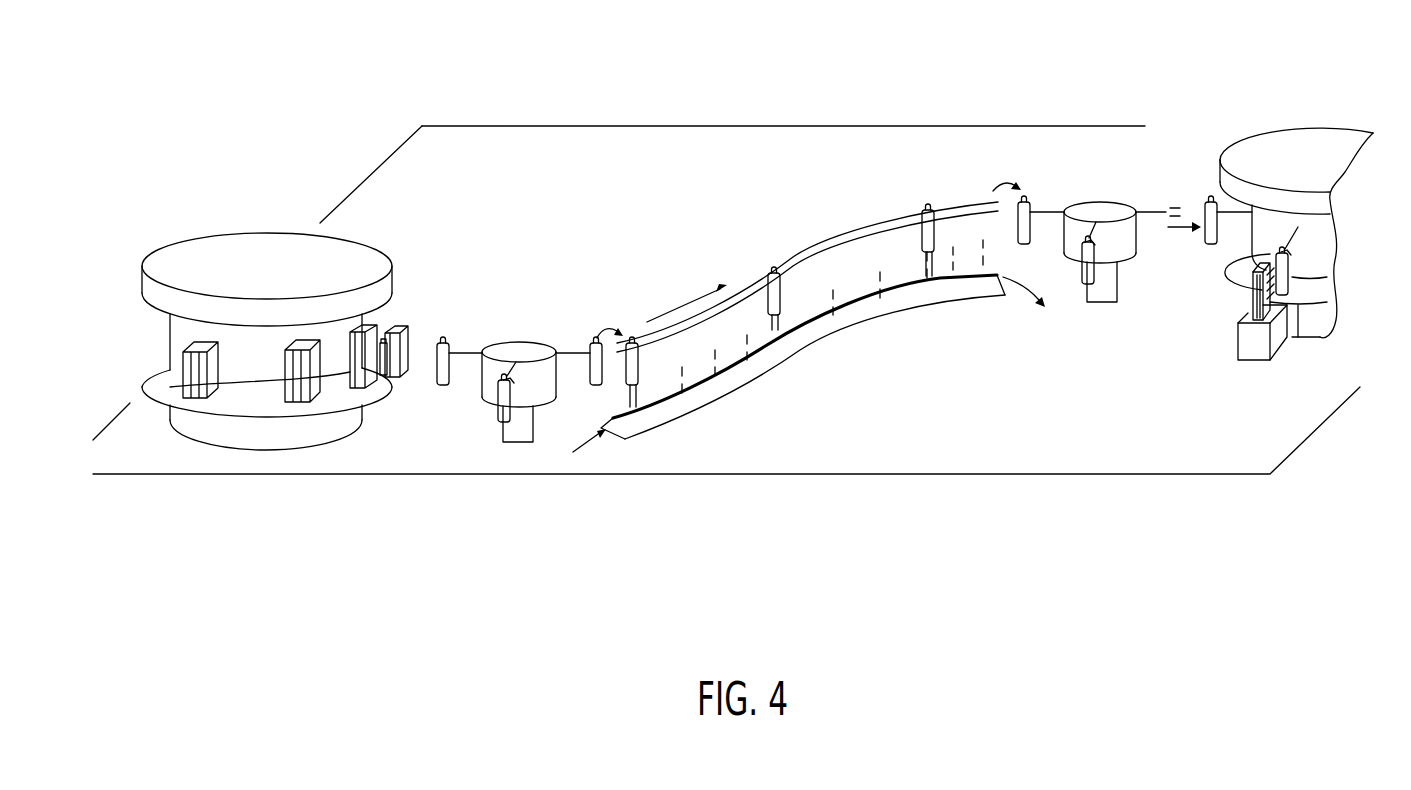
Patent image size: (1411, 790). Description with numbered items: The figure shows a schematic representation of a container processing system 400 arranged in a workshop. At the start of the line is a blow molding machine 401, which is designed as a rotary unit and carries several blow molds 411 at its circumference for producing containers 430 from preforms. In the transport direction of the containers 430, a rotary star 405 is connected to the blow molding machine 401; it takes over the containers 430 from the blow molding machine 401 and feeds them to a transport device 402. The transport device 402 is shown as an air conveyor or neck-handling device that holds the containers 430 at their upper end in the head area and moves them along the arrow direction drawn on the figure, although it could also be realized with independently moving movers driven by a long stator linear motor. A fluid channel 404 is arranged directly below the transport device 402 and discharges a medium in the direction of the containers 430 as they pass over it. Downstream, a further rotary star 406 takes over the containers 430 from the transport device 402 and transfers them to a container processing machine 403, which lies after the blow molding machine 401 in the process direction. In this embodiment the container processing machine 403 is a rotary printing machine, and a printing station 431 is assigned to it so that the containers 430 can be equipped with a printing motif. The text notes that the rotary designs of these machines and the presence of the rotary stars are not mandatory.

The container processing system 400 is at (563, 94).
The blow molding machine 401 is at (367, 258).
The transport device 402 is at (775, 270).
The container processing machine 403 is at (1275, 140).
The fluid channel 404 is at (873, 318).
The rotary star 405 is at (523, 342).
The further rotary star 406 is at (1098, 208).
The blow molds 411 is at (377, 387).
The containers 430 is at (781, 306).
The printing station 431 is at (1253, 295).